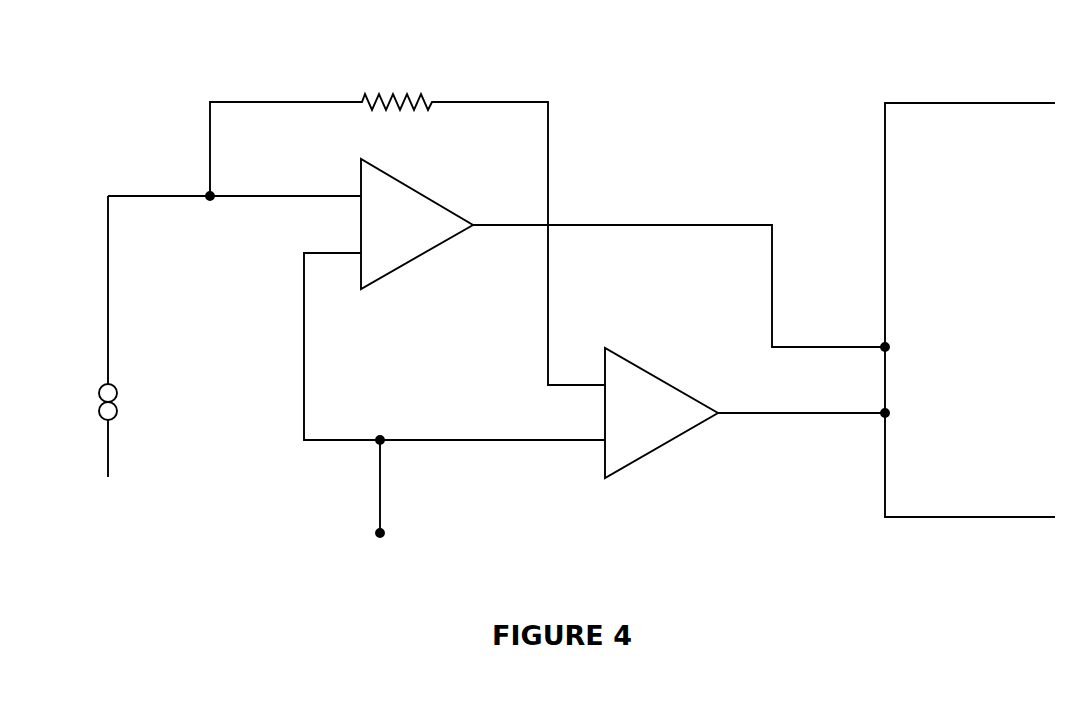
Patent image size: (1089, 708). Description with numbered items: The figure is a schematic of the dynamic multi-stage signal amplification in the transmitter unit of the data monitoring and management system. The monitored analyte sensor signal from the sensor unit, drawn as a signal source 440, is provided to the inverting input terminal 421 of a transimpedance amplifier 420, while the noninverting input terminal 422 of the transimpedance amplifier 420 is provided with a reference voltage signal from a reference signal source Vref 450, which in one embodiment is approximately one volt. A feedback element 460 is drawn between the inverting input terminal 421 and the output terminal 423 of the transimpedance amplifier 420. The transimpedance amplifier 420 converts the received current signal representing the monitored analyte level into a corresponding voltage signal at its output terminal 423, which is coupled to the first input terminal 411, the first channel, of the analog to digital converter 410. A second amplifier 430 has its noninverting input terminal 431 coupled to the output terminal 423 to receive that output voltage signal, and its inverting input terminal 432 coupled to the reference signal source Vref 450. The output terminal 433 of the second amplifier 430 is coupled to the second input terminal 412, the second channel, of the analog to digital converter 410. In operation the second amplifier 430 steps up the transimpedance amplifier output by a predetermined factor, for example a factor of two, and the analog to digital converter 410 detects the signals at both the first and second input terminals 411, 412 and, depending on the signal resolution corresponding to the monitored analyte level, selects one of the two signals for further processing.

The analog to digital converter (ADC) 410 is at (940, 103).
The first input terminal 411 is at (880, 346).
The second input terminal 412 is at (880, 413).
The transimpedance amplifier 420 is at (416, 197).
The inverting input terminal 421 is at (358, 195).
The noninverting input terminal 422 is at (358, 254).
The output terminal 423 is at (476, 227).
The second amplifier 430 is at (662, 440).
The noninverting input terminal 431 is at (603, 385).
The inverting input terminal 432 is at (603, 442).
The output terminal 433 is at (719, 412).
The signal source 440 is at (118, 412).
The reference signal source Vref 450 is at (378, 536).
The feedback resistor 460 is at (397, 94).